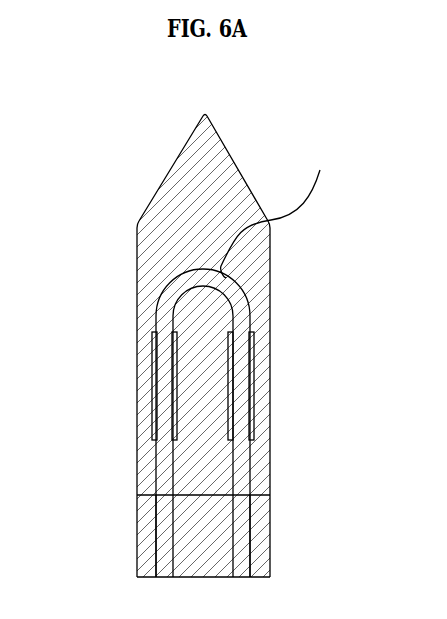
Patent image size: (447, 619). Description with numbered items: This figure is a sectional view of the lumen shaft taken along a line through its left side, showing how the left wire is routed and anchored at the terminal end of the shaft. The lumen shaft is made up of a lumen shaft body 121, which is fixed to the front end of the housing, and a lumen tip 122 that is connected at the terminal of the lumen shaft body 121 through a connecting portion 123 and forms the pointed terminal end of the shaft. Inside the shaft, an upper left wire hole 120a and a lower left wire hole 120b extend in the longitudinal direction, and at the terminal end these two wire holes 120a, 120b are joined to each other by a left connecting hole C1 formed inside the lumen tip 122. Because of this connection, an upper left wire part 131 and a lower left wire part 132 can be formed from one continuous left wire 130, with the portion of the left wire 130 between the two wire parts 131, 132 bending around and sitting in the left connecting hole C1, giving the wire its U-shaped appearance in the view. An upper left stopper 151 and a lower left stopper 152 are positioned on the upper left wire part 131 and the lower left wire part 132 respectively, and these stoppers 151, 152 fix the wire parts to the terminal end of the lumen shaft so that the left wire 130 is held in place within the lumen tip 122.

The upper left wire hole 120a is at (157, 541).
The lower left wire hole 120b is at (251, 547).
The lumen shaft body 121 is at (137, 557).
The lumen tip 122 is at (137, 260).
The connecting portion 123 is at (262, 497).
The left wire 130 is at (181, 268).
The upper left wire part 131 is at (170, 466).
The lower left wire part 132 is at (243, 463).
The upper left stopper 151 is at (153, 390).
The lower left stopper 152 is at (254, 382).
The left connecting hole C1 is at (278, 212).